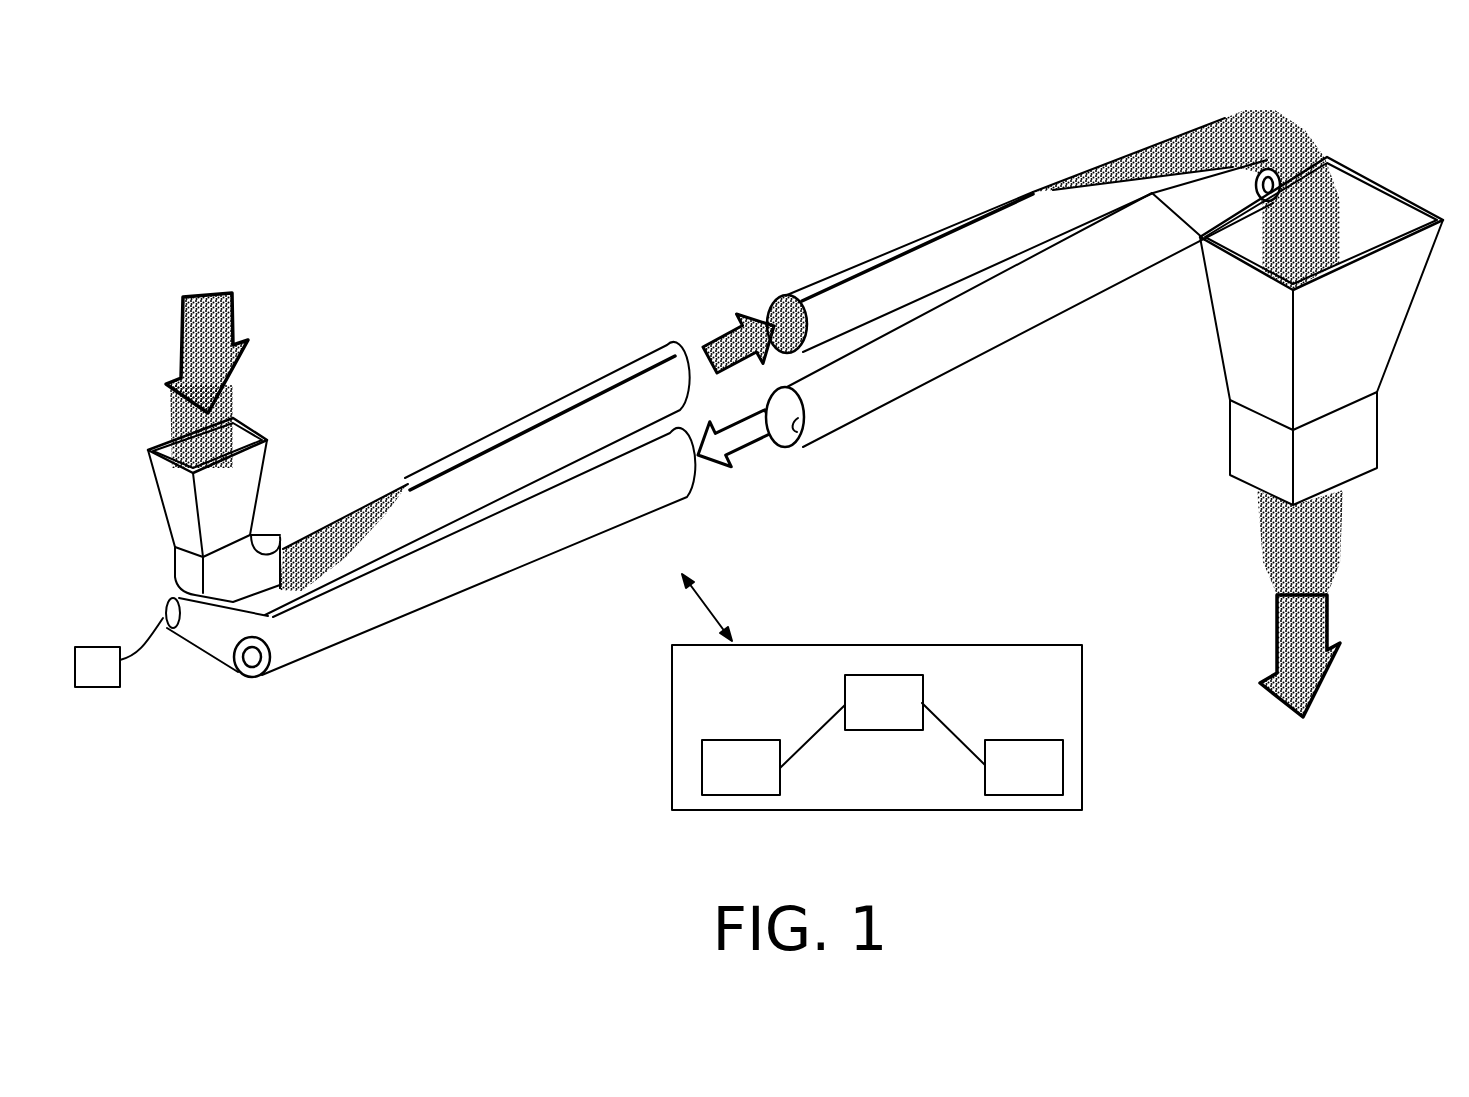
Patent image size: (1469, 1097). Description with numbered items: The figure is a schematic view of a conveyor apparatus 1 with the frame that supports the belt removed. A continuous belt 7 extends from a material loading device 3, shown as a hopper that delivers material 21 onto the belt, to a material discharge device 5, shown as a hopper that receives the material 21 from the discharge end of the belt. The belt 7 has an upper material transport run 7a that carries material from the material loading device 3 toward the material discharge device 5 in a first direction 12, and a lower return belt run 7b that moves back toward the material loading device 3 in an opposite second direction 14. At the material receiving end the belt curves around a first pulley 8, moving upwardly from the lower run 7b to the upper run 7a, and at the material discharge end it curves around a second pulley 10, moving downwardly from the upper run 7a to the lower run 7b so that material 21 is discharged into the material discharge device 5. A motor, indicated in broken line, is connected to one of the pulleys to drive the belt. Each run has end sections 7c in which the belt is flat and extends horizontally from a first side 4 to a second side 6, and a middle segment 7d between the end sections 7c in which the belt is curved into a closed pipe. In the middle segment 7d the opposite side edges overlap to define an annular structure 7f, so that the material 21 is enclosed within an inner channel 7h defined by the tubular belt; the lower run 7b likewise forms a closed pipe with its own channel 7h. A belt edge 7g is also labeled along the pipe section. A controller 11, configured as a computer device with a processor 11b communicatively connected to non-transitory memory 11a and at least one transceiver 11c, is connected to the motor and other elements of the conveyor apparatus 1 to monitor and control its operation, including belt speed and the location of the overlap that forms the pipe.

The conveyor apparatus 1 is at (530, 160).
The material loading device 3 is at (284, 412).
The first side 4 is at (178, 597).
The material discharge device 5 is at (1212, 374).
The second side 6 is at (266, 617).
The belt 7 is at (824, 212).
The upper material transport run 7a is at (520, 437).
The lower return belt run 7b is at (527, 543).
The end sections 7c is at (328, 522).
The middle segment 7d is at (827, 284).
The annular structure 7f is at (783, 468).
The belt overlap edge 7g is at (947, 244).
The channel 7h is at (770, 300).
The first pulley 8 is at (283, 680).
The second pulley 10 is at (1175, 105).
The controller 11 is at (877, 692).
The non-transitory memory 11a is at (741, 767).
The processor 11b is at (884, 702).
The transceiver 11c is at (1024, 767).
The first direction 12 is at (697, 352).
The second direction 14 is at (717, 468).
The material 21 is at (236, 318).